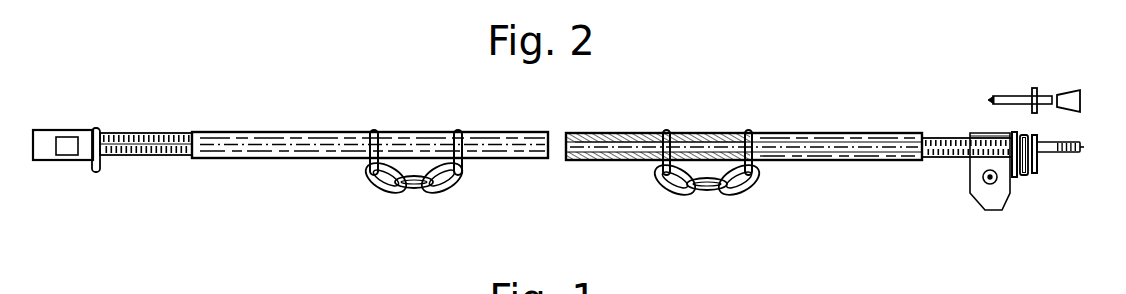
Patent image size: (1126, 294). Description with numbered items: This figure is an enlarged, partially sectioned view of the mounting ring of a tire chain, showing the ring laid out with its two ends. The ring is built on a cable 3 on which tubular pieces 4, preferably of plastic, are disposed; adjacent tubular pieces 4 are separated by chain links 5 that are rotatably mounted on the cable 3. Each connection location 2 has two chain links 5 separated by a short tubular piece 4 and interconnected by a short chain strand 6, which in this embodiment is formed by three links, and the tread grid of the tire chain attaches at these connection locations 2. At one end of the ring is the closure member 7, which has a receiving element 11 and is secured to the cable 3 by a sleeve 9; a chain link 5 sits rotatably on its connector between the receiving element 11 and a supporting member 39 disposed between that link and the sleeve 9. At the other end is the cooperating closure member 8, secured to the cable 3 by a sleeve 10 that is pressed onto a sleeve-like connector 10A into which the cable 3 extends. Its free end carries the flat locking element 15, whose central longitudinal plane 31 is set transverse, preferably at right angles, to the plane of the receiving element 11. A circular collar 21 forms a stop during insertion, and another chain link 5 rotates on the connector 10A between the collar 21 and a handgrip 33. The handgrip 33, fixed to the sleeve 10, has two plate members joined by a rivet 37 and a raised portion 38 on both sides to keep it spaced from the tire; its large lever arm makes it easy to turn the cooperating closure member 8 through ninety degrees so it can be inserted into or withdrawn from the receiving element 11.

The connection location 2 is at (415, 189).
The cable 3 is at (593, 140).
The tubular piece 4 is at (275, 150).
The chain link 5 is at (95, 128).
The chain strand 6 is at (398, 196).
The closure member 7 is at (43, 160).
The cooperating closure member 8 is at (1056, 131).
The sleeve 9 is at (160, 157).
The sleeve 10 is at (947, 158).
The sleeve-like connector 10A is at (1020, 138).
The receiving element 11 is at (87, 156).
The locking element 15 is at (1073, 152).
The collar 21 is at (1015, 178).
The central longitudinal plane 31 is at (1082, 147).
The handgrip 33 is at (983, 205).
The rivet 37 is at (975, 138).
The raised portion 38 is at (984, 184).
The supporting member 39 is at (102, 150).